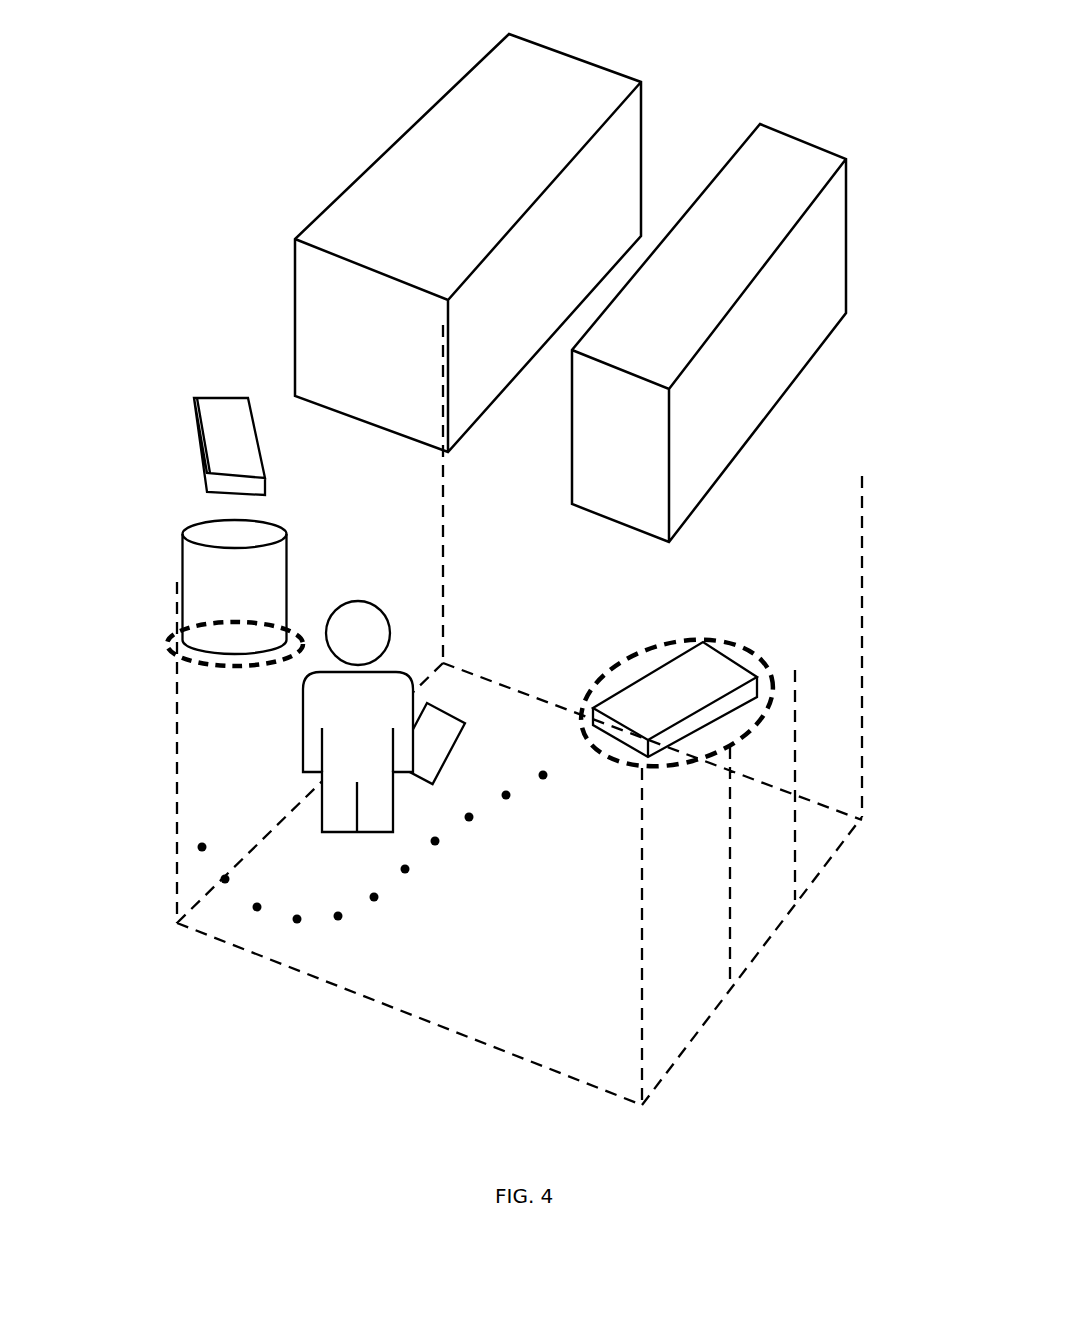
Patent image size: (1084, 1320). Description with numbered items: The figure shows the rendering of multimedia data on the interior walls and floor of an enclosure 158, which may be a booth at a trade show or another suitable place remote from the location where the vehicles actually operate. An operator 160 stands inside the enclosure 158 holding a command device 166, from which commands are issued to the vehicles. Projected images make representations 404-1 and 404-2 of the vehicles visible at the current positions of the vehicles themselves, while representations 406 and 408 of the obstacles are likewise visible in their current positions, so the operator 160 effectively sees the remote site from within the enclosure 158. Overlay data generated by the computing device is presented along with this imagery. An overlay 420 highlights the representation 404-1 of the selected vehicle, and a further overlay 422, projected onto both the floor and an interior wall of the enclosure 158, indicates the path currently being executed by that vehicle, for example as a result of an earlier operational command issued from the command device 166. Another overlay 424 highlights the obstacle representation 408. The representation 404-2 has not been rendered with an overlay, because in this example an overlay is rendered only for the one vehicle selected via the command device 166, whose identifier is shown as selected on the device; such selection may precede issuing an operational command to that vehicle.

The enclosure 158 is at (400, 1007).
The representation of obstacle 406 is at (367, 170).
The representation of vehicle 404-2 is at (193, 398).
The representation of obstacle 408 is at (195, 565).
The overlay 424 is at (173, 645).
The command device 166 is at (430, 703).
The operator 160 is at (305, 705).
The representation of vehicle 404-1 is at (718, 683).
The overlay 420 is at (642, 657).
The overlay 422 is at (428, 857).